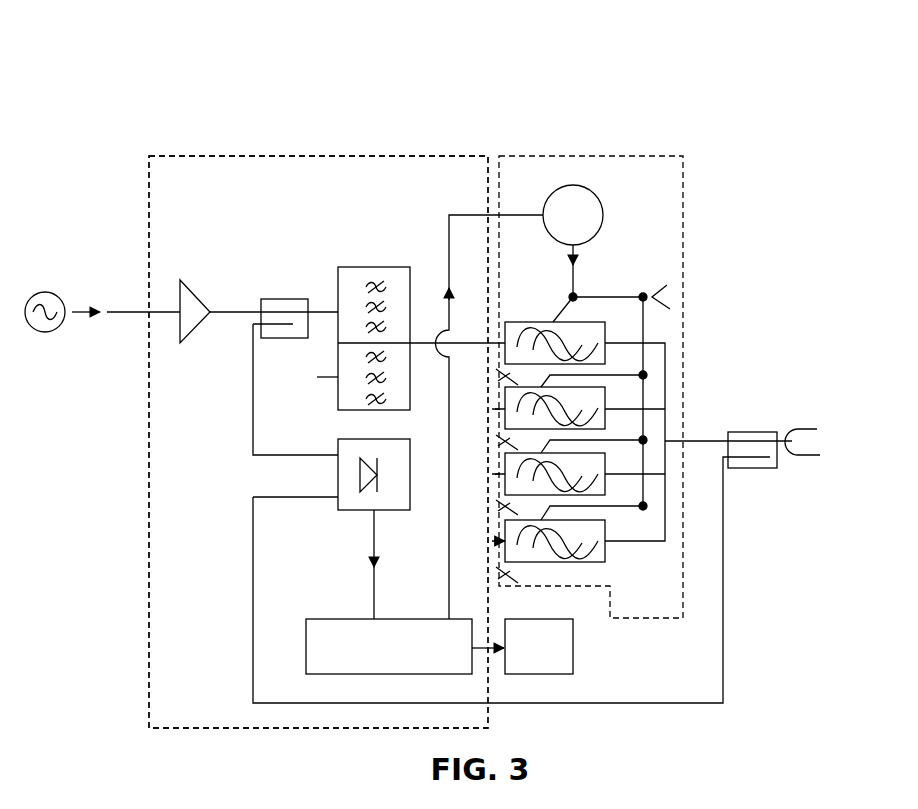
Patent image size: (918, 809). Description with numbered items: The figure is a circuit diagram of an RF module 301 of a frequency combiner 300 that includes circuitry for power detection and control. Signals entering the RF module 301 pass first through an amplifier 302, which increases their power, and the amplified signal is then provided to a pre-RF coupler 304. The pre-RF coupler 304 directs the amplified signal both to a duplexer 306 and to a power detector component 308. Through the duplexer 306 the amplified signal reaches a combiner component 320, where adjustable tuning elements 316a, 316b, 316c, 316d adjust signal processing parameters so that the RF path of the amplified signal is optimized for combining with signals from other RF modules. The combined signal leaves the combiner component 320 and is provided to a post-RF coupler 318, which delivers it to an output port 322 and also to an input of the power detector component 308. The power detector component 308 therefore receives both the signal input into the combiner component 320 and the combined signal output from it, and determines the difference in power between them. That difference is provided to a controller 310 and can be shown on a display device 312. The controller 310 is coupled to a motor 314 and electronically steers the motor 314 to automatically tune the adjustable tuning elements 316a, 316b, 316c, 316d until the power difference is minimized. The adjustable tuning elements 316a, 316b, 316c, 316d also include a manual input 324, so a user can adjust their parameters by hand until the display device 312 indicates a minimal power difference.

The frequency combiner 300 is at (738, 82).
The RF module 301 is at (323, 156).
The amplifier 302 is at (195, 330).
The pre-RF coupler 304 is at (275, 298).
The duplexer 306 is at (410, 282).
The power detector component 308 is at (410, 458).
The controller 310 is at (306, 628).
The display device 312 is at (573, 638).
The motor 314 is at (603, 212).
The adjustable tuning element 316a is at (571, 343).
The adjustable tuning element 316b is at (571, 408).
The adjustable tuning element 316c is at (571, 474).
The adjustable tuning element 316d is at (571, 541).
The post-RF coupler 318 is at (770, 470).
The combiner component 320 is at (582, 156).
The output port 322 is at (812, 428).
The manual input 324 is at (658, 291).